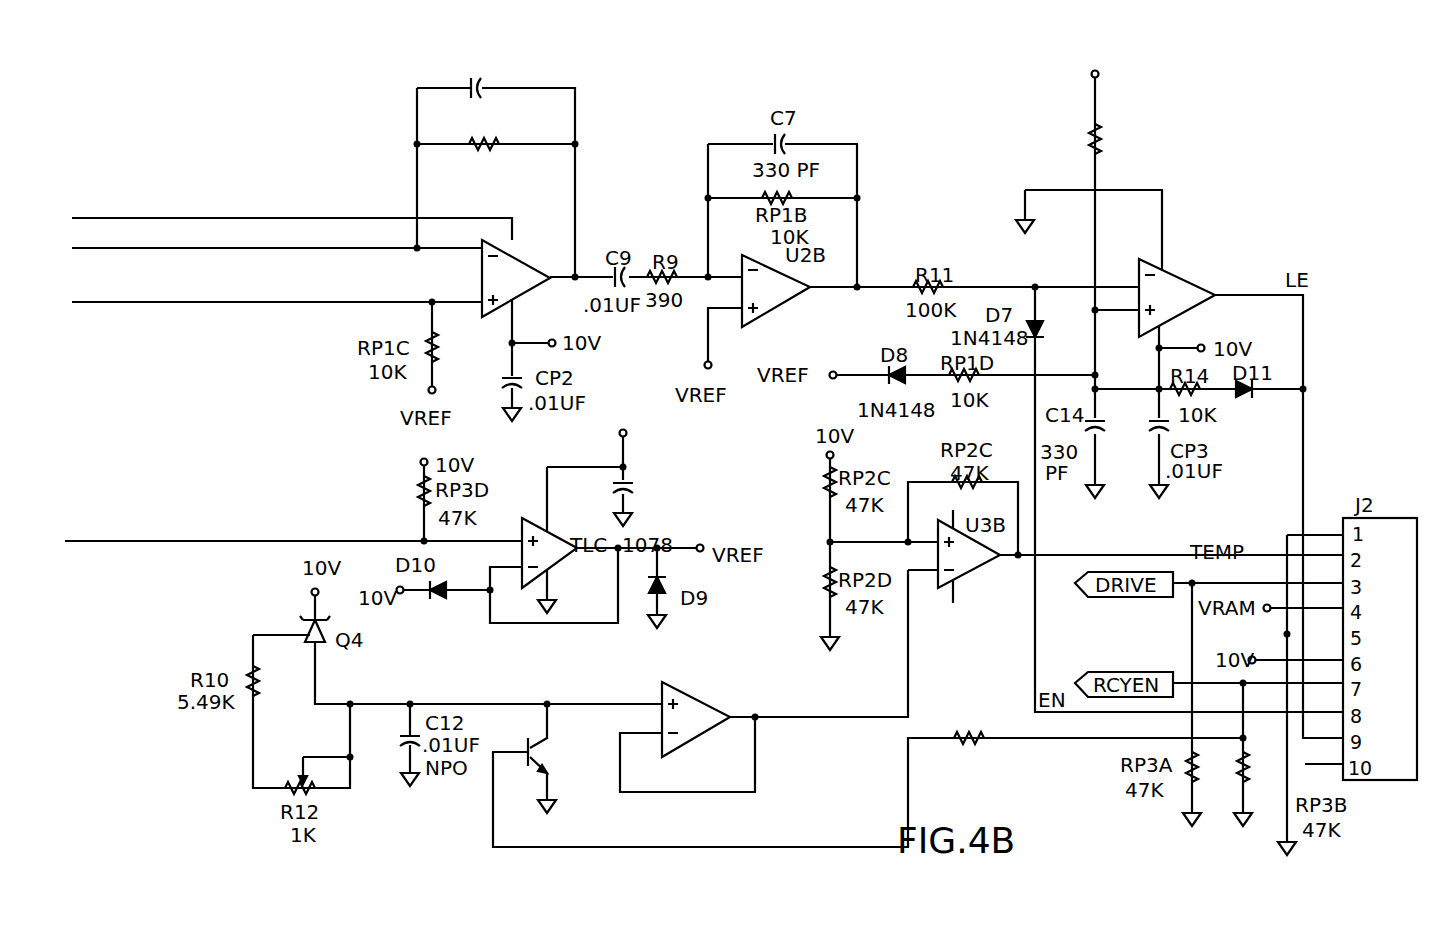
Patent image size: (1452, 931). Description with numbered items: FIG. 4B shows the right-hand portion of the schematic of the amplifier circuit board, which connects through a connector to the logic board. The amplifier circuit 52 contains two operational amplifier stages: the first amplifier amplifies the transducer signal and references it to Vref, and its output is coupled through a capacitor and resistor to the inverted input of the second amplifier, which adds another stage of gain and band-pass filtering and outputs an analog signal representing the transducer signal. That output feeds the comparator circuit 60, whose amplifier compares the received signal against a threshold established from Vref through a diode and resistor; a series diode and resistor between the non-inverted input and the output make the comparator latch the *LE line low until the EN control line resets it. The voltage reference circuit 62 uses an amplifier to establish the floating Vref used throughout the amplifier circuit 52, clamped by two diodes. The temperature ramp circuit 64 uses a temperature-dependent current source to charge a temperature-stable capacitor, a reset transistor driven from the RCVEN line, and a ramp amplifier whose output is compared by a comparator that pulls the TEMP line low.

The amplifier circuit 52 is at (582, 64).
The comparator circuit 60 is at (1145, 130).
The voltage reference circuit 62 is at (707, 495).
The transistor drive circuit (Q5/U4B) 64 is at (596, 857).